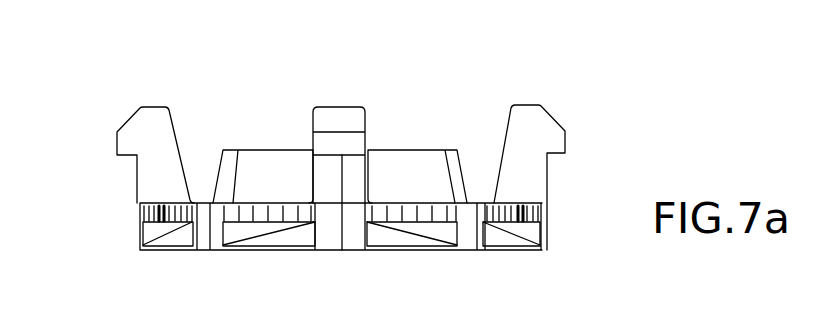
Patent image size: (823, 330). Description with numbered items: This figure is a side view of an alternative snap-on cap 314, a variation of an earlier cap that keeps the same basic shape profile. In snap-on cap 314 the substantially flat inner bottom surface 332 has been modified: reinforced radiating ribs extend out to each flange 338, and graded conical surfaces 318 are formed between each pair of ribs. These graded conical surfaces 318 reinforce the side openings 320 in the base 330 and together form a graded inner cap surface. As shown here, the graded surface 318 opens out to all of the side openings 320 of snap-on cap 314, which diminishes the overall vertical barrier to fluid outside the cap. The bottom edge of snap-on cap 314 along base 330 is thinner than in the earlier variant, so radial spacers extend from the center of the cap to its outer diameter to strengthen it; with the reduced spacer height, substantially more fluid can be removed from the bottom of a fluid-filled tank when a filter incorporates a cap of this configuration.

The snap-on cap 314 is at (131, 209).
The graded conical surfaces 318 is at (290, 237).
The side openings 320 is at (343, 233).
The base 330 is at (525, 250).
The substantially flat inner bottom surface 332 is at (342, 250).
The flange 338 is at (128, 120).